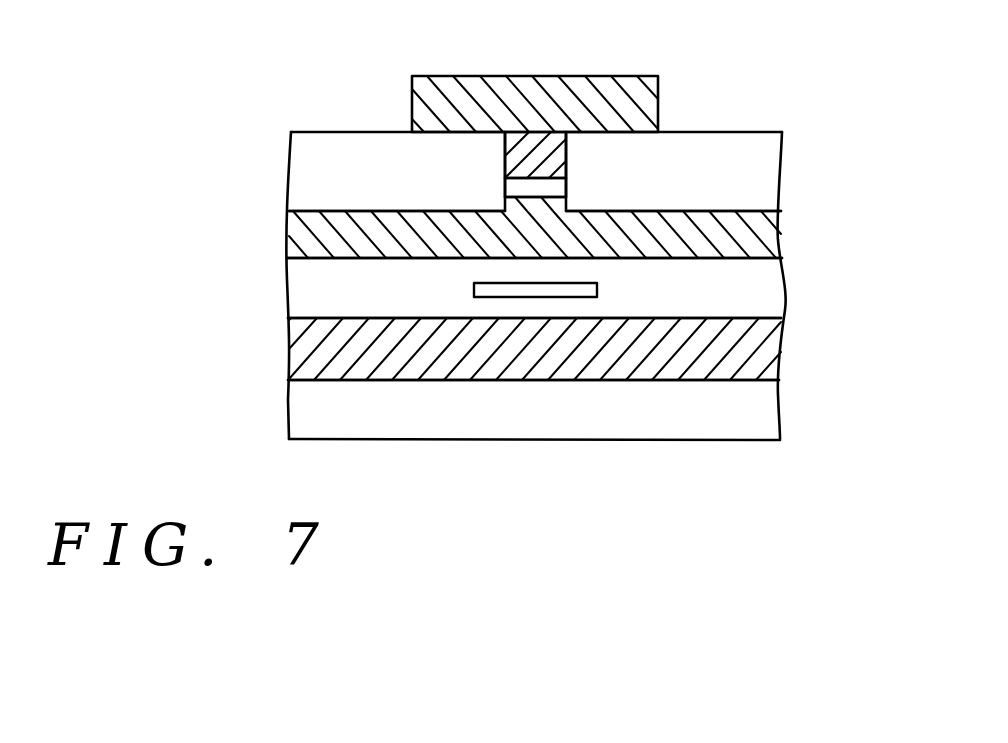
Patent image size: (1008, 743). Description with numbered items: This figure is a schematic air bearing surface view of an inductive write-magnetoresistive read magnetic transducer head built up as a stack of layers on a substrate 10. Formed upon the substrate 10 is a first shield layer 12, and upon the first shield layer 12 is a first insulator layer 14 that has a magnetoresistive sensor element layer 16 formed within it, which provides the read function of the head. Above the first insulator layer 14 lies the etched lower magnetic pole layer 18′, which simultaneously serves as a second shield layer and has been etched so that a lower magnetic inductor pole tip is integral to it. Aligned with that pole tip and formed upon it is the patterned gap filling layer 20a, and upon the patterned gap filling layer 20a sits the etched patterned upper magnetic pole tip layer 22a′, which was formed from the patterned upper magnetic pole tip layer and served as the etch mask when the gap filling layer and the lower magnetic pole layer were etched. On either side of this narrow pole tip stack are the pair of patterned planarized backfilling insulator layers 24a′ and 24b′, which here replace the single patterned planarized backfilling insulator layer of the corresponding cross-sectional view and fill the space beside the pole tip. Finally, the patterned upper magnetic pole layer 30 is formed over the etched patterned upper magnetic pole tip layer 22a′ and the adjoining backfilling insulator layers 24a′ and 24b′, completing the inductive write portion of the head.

The substrate 10 is at (298, 411).
The first shield layer 12 is at (298, 349).
The first insulator layer 14 is at (298, 289).
The magnetoresistive (MR) sensor element layer 16 is at (585, 290).
The etched lower magnetic pole layer 18′ is at (300, 231).
The patterned gap filling layer 20a is at (518, 187).
The etched patterned upper magnetic pole tip layer 22a′ is at (523, 143).
The patterned planarized backfilling insulator layer 24a′ is at (313, 153).
The patterned planarized backfilling insulator layer 24b′ is at (755, 158).
The patterned upper magnetic pole layer 30 is at (645, 96).